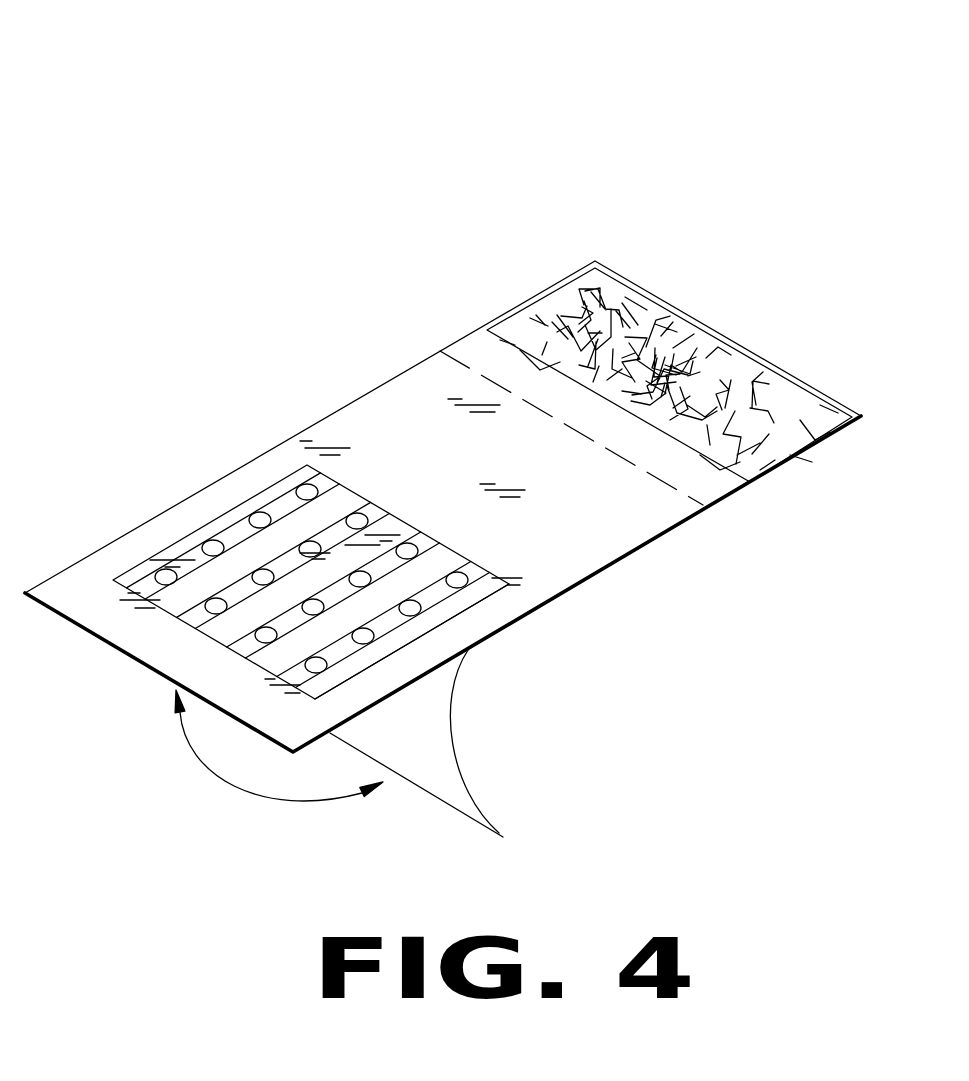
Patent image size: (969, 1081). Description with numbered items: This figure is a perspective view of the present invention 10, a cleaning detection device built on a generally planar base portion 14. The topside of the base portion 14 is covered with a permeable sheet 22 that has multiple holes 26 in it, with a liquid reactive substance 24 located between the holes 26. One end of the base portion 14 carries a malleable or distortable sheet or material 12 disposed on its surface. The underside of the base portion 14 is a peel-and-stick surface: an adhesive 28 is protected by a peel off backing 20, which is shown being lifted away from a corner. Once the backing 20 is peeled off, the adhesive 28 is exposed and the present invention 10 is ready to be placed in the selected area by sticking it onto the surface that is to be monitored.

The present invention 10 is at (535, 238).
The malleable or distortable sheet 12 is at (627, 297).
The base portion 14 is at (643, 545).
The peel off backing 20 is at (462, 766).
The permeable sheet 22 is at (282, 500).
The liquid reactive substance 24 is at (490, 580).
The holes 26 is at (263, 632).
The adhesive 28 is at (388, 697).